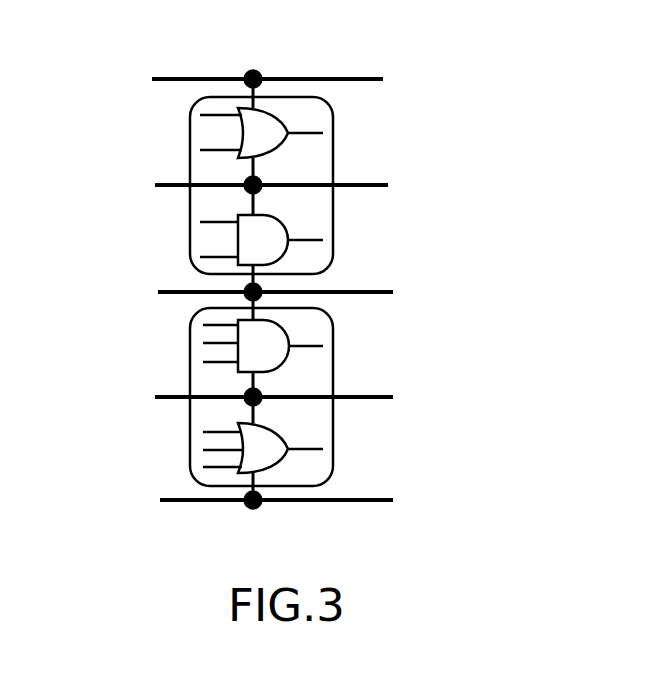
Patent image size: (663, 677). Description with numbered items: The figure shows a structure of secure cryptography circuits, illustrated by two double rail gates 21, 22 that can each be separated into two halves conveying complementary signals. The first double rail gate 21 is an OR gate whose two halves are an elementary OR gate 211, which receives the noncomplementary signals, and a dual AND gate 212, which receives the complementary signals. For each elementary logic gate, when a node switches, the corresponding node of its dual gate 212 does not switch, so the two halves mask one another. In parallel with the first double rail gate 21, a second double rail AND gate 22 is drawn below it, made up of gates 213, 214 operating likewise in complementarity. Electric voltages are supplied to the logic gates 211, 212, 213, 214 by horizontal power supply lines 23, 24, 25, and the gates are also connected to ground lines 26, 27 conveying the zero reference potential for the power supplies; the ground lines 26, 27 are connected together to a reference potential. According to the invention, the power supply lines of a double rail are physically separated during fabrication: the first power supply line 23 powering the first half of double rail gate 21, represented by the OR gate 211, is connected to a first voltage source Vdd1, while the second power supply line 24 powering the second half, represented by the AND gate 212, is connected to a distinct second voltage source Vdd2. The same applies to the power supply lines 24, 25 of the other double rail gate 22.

The first double rail gate 21 is at (497, 115).
The second double rail gate 22 is at (502, 322).
The first power supply line 23 is at (200, 79).
The second power supply line 24 is at (166, 293).
The power supply line 25 is at (217, 501).
The ground line 26 is at (168, 184).
The ground line 27 is at (170, 398).
The elementary OR gate 211 is at (268, 131).
The dual AND gate 212 is at (273, 237).
The elementary gate of second double rail gate 213 is at (267, 344).
The dual gate of second double rail gate 214 is at (266, 449).